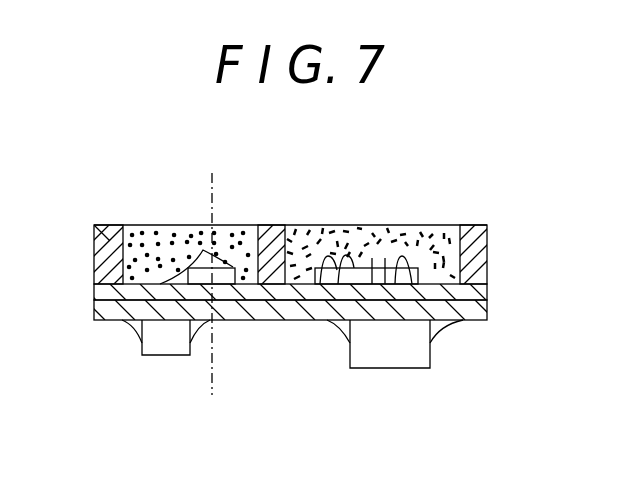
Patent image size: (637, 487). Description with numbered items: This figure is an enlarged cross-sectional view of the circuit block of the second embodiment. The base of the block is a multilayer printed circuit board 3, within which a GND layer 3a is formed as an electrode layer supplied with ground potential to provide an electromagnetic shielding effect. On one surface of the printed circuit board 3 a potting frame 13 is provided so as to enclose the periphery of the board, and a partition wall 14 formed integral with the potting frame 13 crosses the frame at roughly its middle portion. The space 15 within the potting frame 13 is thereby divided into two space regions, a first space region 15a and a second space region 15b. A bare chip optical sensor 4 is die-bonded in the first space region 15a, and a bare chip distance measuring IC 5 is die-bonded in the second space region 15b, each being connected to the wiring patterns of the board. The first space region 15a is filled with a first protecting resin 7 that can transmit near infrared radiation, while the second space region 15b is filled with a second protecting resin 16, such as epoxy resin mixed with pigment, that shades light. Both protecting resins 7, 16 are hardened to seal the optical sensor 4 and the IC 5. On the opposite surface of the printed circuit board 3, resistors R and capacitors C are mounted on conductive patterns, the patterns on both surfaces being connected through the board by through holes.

The printed circuit board 3 is at (487, 317).
The GND layer 3a is at (463, 323).
The optical sensor 4 is at (190, 225).
The distance measuring IC 5 is at (392, 225).
The first protecting resin 7 is at (160, 225).
The potting frame 13 is at (98, 225).
The partition wall 14 is at (265, 225).
The space 15 is at (343, 143).
The first space region 15a is at (240, 225).
The second space region 15b is at (337, 225).
The second protecting resin 16 is at (442, 225).
The resistors R is at (167, 345).
The capacitors C is at (407, 360).